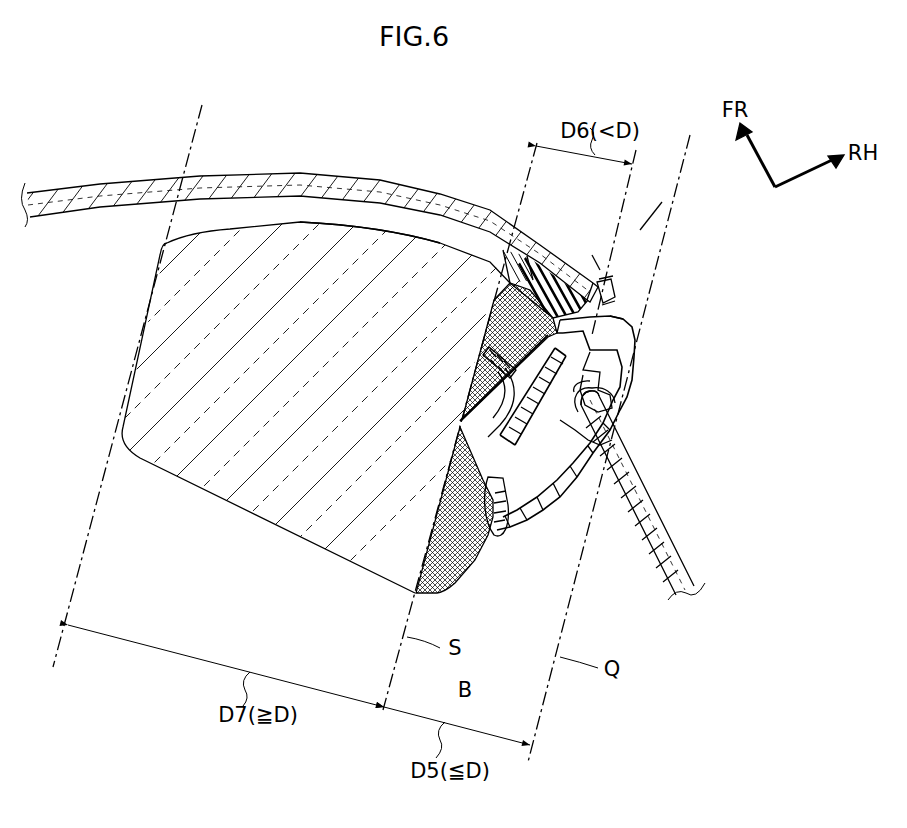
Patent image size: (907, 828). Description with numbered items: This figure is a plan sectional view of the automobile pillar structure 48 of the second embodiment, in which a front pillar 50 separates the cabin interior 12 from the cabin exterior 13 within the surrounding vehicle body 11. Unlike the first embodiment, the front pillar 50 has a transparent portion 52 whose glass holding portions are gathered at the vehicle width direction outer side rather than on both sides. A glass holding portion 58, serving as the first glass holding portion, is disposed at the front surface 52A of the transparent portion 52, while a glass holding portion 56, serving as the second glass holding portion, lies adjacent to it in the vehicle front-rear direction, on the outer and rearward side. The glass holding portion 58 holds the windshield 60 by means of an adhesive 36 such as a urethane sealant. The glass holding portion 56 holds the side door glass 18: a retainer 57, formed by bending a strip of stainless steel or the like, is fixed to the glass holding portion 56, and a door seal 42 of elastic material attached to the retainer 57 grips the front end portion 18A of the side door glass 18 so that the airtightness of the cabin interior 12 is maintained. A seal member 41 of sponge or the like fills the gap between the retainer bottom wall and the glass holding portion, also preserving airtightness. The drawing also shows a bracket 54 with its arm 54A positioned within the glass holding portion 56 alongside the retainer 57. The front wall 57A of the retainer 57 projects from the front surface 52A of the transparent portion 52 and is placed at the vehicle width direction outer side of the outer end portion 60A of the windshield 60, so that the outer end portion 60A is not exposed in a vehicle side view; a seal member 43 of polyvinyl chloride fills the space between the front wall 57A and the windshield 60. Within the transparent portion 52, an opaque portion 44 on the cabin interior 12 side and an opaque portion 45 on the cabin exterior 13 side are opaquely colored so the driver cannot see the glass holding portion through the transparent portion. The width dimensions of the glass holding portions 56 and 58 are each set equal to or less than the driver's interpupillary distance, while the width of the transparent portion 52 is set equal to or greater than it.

The vehicle side door 11 is at (783, 262).
The cabin interior 12 is at (271, 787).
The cabin exterior 13 is at (455, 104).
The side door glass 18 is at (675, 533).
The front end portion of the side door glass 18A is at (617, 397).
The adhesive 36 is at (534, 258).
The seal member 41 is at (627, 318).
The door seal 42 is at (553, 503).
The seal member 43 is at (613, 293).
The opaque portion 44 is at (457, 573).
The opaque portion 45 is at (507, 305).
The automobile pillar structure 48 is at (626, 432).
The front pillar 50 is at (662, 202).
The transparent portion 52 is at (297, 553).
The front surface of the transparent portion 52A is at (307, 220).
The bracket 54 is at (600, 363).
The bracket arm 54A is at (493, 480).
The glass holding portion 56 is at (640, 383).
The retainer 57 is at (634, 332).
The front wall of the retainer 57A is at (600, 318).
The glass holding portion 58 is at (592, 255).
The windshield 60 is at (297, 172).
The outer end portion of the windshield 60A is at (610, 290).